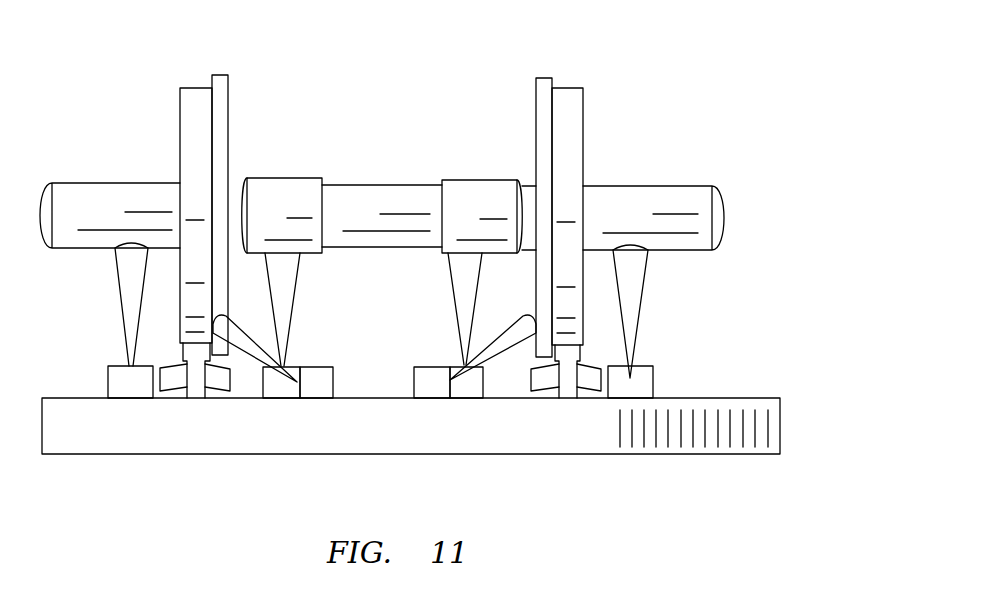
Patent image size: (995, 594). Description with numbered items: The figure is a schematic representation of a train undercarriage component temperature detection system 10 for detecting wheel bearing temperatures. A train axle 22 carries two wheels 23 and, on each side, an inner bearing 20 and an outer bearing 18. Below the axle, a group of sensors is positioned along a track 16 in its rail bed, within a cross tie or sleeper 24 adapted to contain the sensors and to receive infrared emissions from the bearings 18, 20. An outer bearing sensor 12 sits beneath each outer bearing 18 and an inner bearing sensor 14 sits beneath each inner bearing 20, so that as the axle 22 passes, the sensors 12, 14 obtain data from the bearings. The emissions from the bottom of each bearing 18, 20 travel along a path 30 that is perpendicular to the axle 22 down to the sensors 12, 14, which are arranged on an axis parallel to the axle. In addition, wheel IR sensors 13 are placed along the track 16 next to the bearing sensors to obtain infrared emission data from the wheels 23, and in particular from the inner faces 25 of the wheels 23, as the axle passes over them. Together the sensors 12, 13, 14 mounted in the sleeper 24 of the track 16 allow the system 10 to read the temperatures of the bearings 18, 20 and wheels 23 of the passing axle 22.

The train undercarriage component temperature detection system 10 is at (702, 320).
The outer bearing sensor 12 is at (107, 381).
The wheel IR sensor 13 is at (318, 389).
The inner bearing sensor 14 is at (282, 390).
The track 16 is at (378, 355).
The outer bearing 18 is at (115, 182).
The inner bearing 20 is at (282, 178).
The train axle 22 is at (355, 185).
The wheel 23 is at (197, 87).
The cross tie or sleeper 24 is at (165, 455).
The inner face 25 is at (228, 293).
The path 30 is at (121, 305).